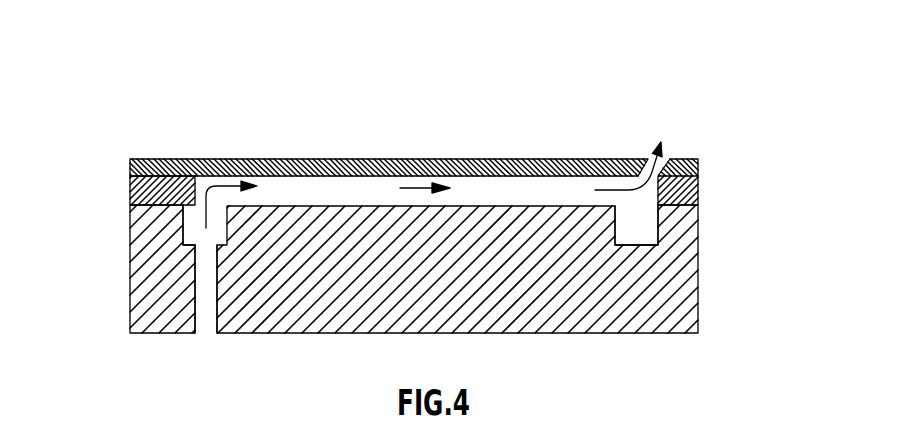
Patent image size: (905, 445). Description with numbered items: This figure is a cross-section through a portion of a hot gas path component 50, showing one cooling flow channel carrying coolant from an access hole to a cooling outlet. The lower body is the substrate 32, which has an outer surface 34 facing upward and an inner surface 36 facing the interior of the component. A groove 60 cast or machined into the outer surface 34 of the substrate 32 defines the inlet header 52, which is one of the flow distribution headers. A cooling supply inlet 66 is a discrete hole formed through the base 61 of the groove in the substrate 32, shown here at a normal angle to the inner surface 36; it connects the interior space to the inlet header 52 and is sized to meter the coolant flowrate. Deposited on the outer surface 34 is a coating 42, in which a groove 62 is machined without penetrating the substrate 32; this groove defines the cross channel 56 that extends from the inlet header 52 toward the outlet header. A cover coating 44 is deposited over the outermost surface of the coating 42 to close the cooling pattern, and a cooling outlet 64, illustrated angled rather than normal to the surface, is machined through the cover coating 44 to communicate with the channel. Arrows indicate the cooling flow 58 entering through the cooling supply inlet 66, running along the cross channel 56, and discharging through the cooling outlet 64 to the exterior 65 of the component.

The substrate 32 is at (655, 310).
The outer surface 34 is at (147, 201).
The inner surface 36 is at (257, 333).
The coating 42 is at (685, 192).
The cover coating 44 is at (283, 159).
The hot gas path component 50 is at (417, 201).
The inlet header 52 is at (192, 225).
The cross channel 56 is at (492, 187).
The cooling flow 58 is at (417, 188).
The groove 60 is at (140, 269).
The base 61 is at (141, 269).
The groove 62 is at (538, 188).
The cooling outlet 64 is at (662, 162).
The exterior 65 is at (196, 106).
The cooling supply inlet 66 is at (203, 297).